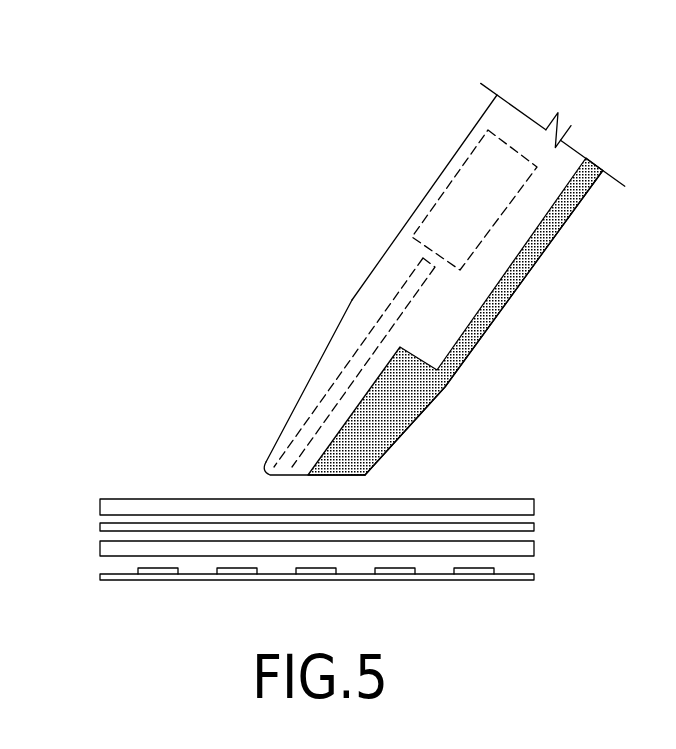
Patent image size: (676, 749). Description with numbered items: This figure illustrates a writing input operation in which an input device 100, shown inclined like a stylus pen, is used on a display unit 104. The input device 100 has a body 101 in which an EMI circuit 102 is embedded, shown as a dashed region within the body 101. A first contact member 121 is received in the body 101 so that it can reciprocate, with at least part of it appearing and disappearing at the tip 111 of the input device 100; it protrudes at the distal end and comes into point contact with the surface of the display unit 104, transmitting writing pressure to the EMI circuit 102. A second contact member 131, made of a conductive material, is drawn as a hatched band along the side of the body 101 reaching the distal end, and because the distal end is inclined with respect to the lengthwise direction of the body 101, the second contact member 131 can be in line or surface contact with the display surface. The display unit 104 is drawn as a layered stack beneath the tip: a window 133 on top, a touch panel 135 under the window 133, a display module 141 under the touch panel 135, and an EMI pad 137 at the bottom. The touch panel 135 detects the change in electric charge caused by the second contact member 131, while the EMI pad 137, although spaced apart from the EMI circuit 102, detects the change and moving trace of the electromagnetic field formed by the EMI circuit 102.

The input device 100 is at (372, 67).
The body 101 is at (413, 218).
The EMI circuit 102 is at (500, 217).
The display unit 104 is at (540, 500).
The tip 111 is at (310, 380).
The first contact member 121 is at (277, 477).
The second contact member 131 is at (493, 313).
The window 133 is at (100, 501).
The touch panel 135 is at (100, 523).
The EMI pad 137 is at (100, 575).
The display module 141 is at (100, 543).